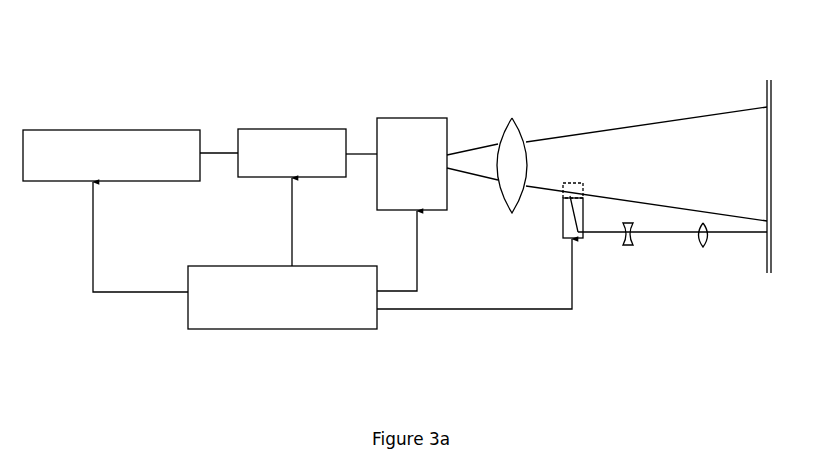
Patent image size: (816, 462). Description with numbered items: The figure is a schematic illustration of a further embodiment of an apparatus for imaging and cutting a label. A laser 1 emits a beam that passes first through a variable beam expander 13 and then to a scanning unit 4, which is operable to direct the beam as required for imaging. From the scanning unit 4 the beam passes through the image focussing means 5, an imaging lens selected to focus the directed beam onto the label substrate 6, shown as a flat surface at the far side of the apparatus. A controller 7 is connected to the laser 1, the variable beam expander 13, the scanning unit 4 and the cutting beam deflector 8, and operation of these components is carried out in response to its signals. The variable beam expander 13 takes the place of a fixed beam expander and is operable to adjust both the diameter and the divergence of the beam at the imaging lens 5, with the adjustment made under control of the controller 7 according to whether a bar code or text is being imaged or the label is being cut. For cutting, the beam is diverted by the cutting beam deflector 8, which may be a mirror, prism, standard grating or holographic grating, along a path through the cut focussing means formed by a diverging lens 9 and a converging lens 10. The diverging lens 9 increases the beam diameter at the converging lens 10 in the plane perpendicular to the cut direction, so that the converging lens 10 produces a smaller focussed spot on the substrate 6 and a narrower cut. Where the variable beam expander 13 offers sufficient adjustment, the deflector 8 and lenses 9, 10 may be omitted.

The laser 1 is at (107, 128).
The variable beam expander 13 is at (300, 122).
The scanning unit 4 is at (410, 110).
The image focussing means 5 is at (511, 110).
The label substrate 6 is at (760, 90).
The controller 7 is at (235, 333).
The cutting beam deflector 8 is at (555, 225).
The diverging lens 9 is at (630, 247).
The converging lens 10 is at (708, 247).